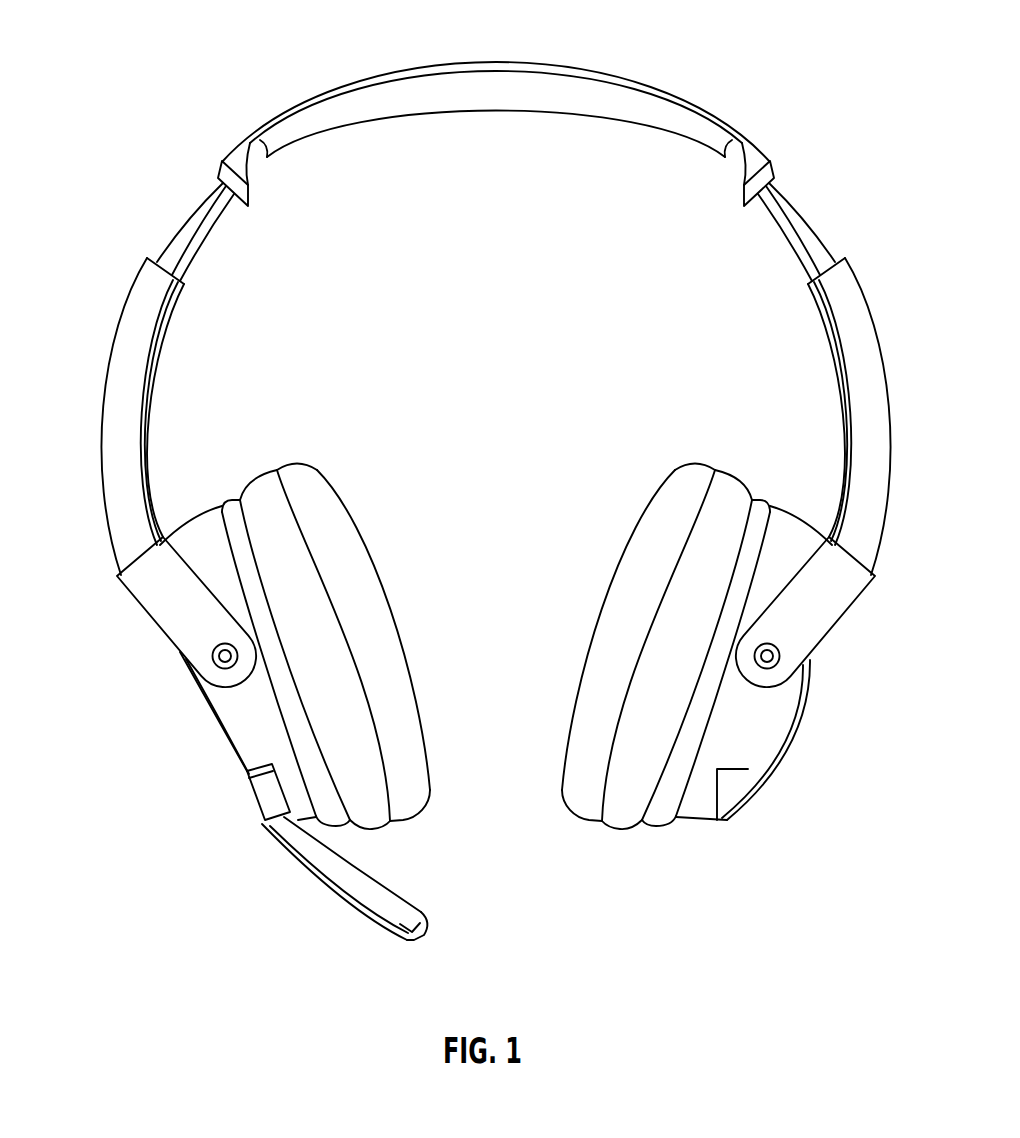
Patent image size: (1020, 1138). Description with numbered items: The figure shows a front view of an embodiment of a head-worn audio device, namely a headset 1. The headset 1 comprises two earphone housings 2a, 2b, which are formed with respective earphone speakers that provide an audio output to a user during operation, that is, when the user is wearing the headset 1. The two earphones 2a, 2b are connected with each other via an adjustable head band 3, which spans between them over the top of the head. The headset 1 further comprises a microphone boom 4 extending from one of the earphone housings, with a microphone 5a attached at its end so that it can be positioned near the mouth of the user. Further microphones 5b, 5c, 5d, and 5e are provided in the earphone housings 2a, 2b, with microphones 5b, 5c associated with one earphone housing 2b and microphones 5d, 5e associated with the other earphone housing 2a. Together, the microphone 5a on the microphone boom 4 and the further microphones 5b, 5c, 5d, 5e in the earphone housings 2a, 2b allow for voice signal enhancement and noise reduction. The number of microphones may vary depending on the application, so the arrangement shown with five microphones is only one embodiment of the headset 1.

The headset 1 is at (833, 41).
The earphone housing 2a is at (748, 748).
The earphone housing 2b is at (245, 747).
The adjustable head band 3 is at (634, 103).
The microphone boom 4 is at (320, 877).
The microphone 5a is at (412, 904).
The microphone 5b is at (173, 692).
The microphone 5c is at (167, 379).
The microphone 5d is at (830, 689).
The microphone 5e is at (824, 379).